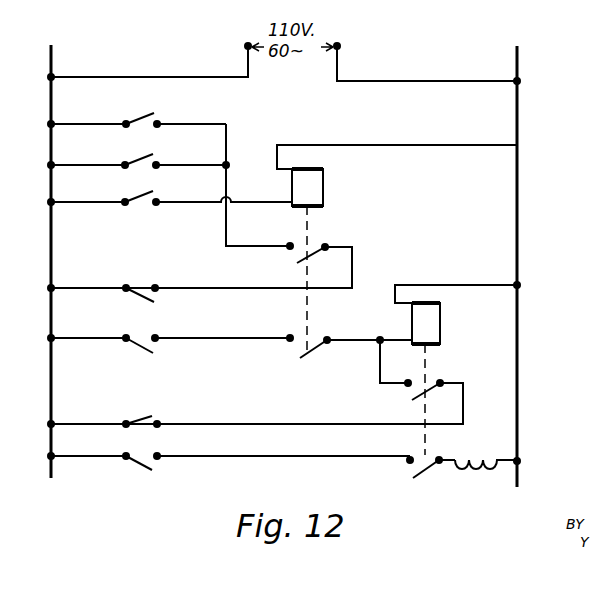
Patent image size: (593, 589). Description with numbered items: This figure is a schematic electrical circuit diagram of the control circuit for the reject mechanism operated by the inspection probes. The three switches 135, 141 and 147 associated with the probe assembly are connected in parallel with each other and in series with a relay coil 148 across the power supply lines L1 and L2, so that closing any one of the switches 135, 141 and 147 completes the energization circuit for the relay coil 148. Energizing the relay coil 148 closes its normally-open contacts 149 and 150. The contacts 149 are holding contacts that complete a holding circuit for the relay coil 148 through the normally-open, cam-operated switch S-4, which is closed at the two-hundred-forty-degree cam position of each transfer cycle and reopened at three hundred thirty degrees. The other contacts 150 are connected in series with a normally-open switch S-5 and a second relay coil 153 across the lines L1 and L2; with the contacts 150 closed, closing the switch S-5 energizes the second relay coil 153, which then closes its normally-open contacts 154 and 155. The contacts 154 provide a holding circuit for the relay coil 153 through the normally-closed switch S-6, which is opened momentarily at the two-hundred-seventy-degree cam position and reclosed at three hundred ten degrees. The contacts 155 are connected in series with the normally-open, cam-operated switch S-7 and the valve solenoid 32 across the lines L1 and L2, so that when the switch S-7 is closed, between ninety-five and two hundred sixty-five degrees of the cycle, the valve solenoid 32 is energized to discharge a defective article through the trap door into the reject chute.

The switch 135 is at (160, 122).
The switch 141 is at (159, 163).
The switch 147 is at (159, 201).
The relay coil 148 is at (323, 186).
The holding contacts 149 is at (298, 256).
The relay contacts 150 is at (300, 362).
The second relay coil 153 is at (440, 322).
The relay contacts 154 is at (409, 396).
The relay contacts 155 is at (411, 471).
The valve solenoid 32 is at (474, 468).
The power supply line L1 is at (50, 48).
The power supply line L2 is at (518, 222).
The cam-operated switch S-4 is at (141, 287).
The switch S-5 is at (145, 340).
The switch S-6 is at (146, 420).
The cam-operated switch S-7 is at (158, 468).